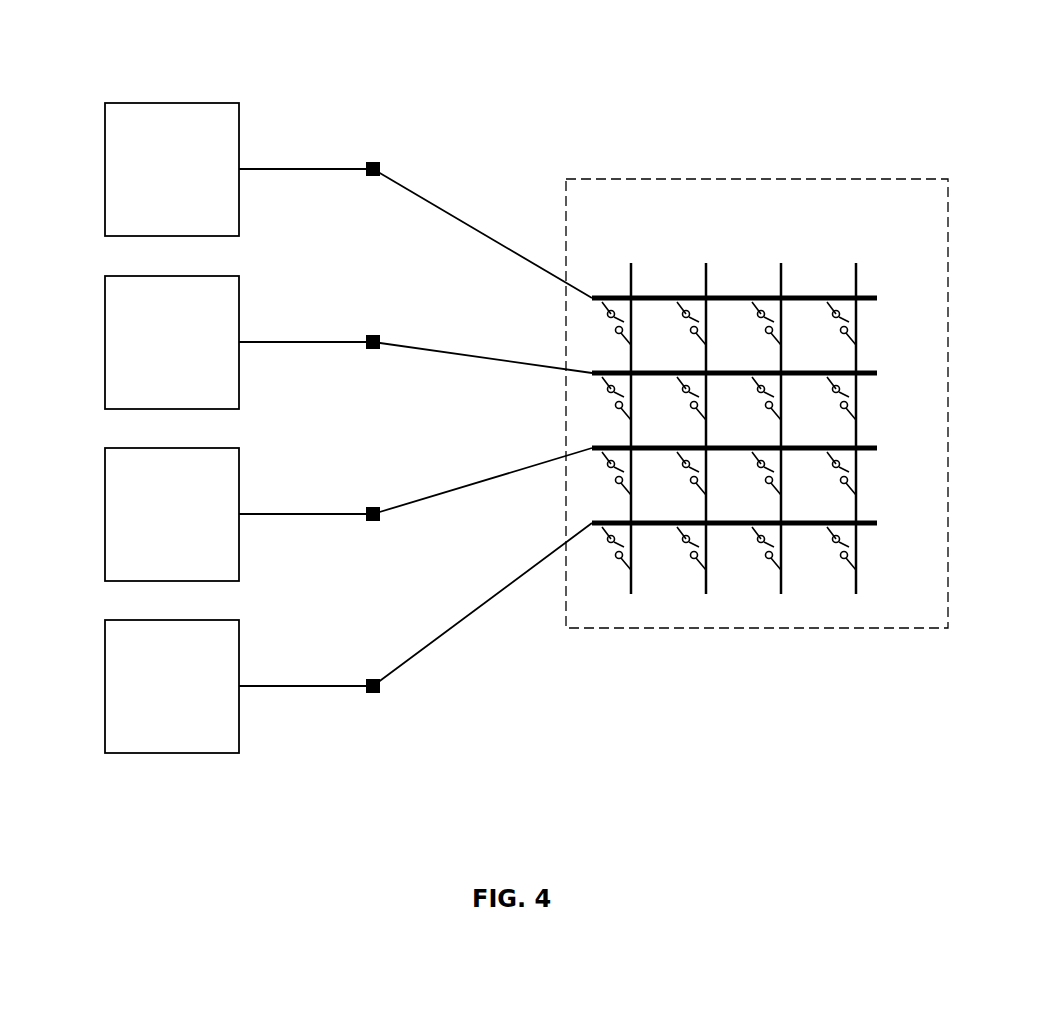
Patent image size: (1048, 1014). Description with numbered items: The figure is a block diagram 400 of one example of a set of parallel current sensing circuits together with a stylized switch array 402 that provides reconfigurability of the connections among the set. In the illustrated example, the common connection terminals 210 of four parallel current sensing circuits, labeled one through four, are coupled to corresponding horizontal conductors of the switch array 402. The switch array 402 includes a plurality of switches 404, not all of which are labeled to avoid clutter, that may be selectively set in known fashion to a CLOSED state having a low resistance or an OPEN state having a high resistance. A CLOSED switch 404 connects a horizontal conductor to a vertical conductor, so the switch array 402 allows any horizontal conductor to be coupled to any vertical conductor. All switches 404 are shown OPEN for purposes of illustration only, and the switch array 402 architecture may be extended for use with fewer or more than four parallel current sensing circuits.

The block diagram 400 is at (60, 49).
The common connection terminal 210 is at (395, 399).
The switch array 402 is at (796, 402).
The switch 404 is at (729, 461).